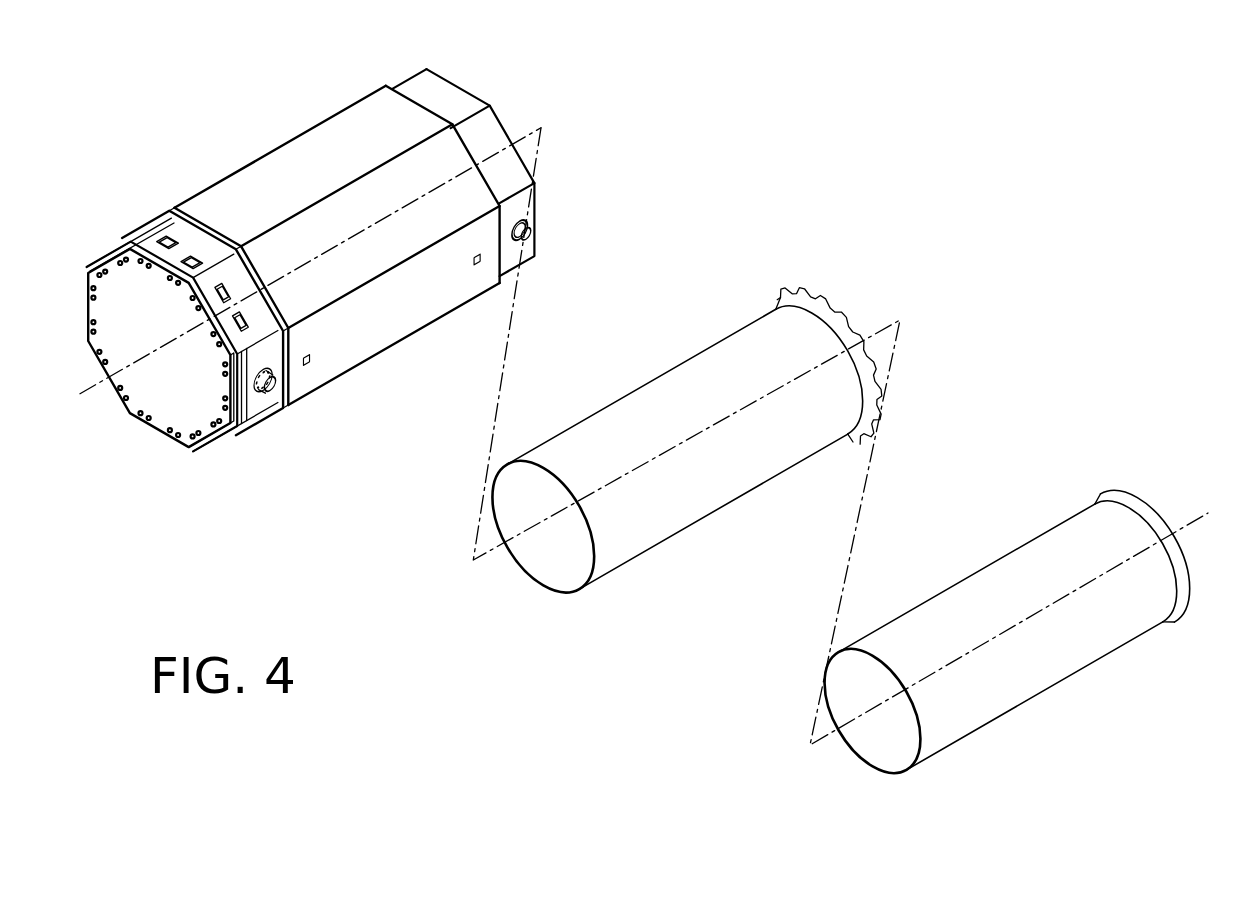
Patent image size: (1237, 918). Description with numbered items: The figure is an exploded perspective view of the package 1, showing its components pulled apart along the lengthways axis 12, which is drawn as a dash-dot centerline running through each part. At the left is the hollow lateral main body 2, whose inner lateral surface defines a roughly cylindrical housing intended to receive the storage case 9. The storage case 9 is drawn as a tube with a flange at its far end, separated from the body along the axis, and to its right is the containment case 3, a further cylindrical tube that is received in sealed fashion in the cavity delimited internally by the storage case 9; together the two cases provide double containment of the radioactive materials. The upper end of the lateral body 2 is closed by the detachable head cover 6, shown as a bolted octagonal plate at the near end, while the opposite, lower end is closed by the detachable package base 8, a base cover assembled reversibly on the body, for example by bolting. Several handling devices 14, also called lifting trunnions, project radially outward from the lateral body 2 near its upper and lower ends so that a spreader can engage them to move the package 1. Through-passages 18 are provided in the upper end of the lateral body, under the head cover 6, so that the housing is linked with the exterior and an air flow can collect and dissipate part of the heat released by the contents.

The package 1 is at (344, 277).
The hollow lateral main body 2 is at (324, 150).
The containment case 3 is at (1003, 580).
The detachable head cover 6 is at (120, 288).
The detachable package base 8 is at (511, 122).
The storage case 9 is at (704, 374).
The lengthways axis 12 is at (104, 399).
The handling devices 14 is at (527, 230).
The through-passages 18 is at (163, 240).